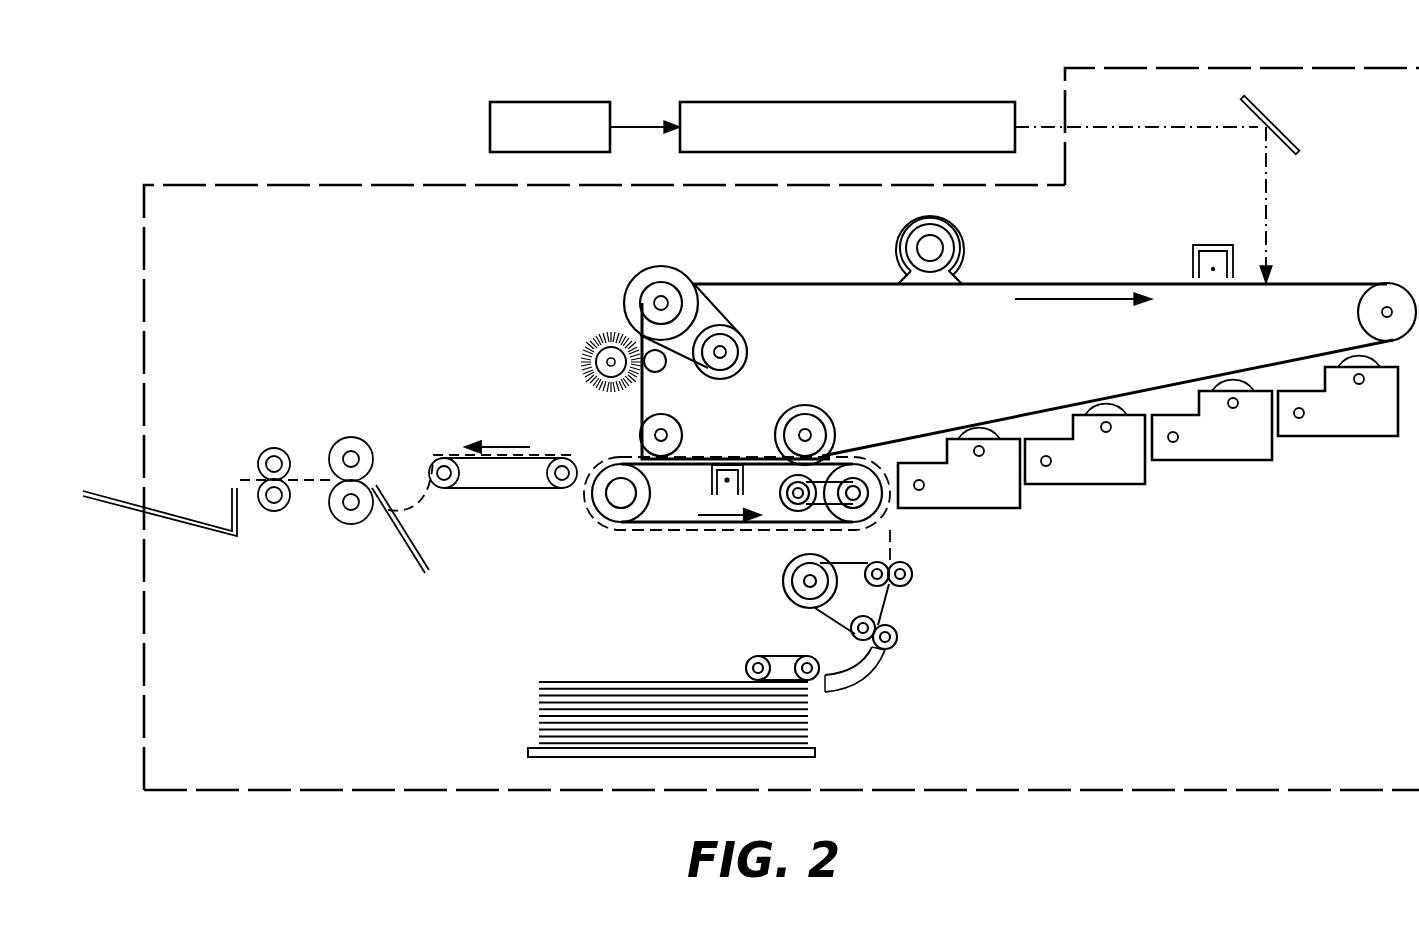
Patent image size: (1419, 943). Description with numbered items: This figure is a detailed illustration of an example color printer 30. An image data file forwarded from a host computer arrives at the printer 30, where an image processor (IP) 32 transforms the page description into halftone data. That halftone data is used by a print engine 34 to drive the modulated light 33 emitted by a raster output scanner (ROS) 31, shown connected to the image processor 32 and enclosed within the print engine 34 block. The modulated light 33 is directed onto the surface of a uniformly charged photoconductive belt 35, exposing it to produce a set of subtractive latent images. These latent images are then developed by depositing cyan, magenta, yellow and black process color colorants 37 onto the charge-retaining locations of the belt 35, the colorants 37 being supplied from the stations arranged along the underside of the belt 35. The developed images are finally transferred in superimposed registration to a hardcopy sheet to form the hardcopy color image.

The printer 30 is at (262, 60).
The raster output scanner (ROS) 31 is at (848, 102).
The image processor (IP) 32 is at (550, 102).
The modulated light 33 is at (1272, 253).
The print engine 34 is at (1150, 68).
The photoconductive belt 35 is at (760, 283).
The process color colorants 37 is at (1362, 459).